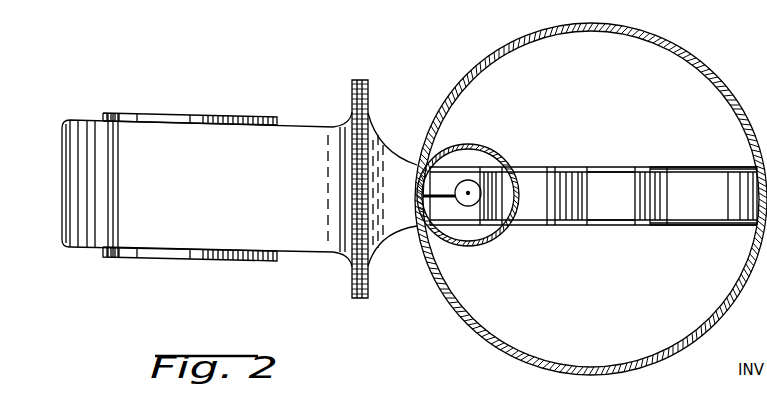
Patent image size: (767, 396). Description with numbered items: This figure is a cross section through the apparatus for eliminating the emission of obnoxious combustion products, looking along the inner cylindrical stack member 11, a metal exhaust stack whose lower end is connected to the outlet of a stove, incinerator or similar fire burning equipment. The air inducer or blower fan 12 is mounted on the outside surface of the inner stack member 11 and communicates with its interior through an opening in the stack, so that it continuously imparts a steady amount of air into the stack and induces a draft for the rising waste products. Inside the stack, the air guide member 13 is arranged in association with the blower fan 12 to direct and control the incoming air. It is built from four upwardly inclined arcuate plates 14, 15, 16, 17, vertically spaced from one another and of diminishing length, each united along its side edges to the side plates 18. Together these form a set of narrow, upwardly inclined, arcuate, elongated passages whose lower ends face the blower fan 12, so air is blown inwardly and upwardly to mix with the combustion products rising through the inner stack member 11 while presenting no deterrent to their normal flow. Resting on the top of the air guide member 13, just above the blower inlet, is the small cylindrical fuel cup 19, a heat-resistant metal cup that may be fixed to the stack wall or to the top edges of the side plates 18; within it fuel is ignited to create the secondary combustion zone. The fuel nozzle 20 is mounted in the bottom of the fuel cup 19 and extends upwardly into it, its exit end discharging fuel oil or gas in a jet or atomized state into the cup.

The inner cylindrical stack member 11 is at (713, 72).
The air inducer or blower fan 12 is at (249, 118).
The air guide member 13 is at (610, 167).
The upwardly inclined arcuate plate 14 is at (756, 197).
The upwardly inclined arcuate plate 15 is at (667, 208).
The upwardly inclined arcuate plate 16 is at (590, 196).
The upwardly inclined arcuate plate 17 is at (501, 189).
The side plates 18 is at (681, 168).
The fuel cup 19 is at (507, 153).
The fuel nozzle 20 is at (468, 180).